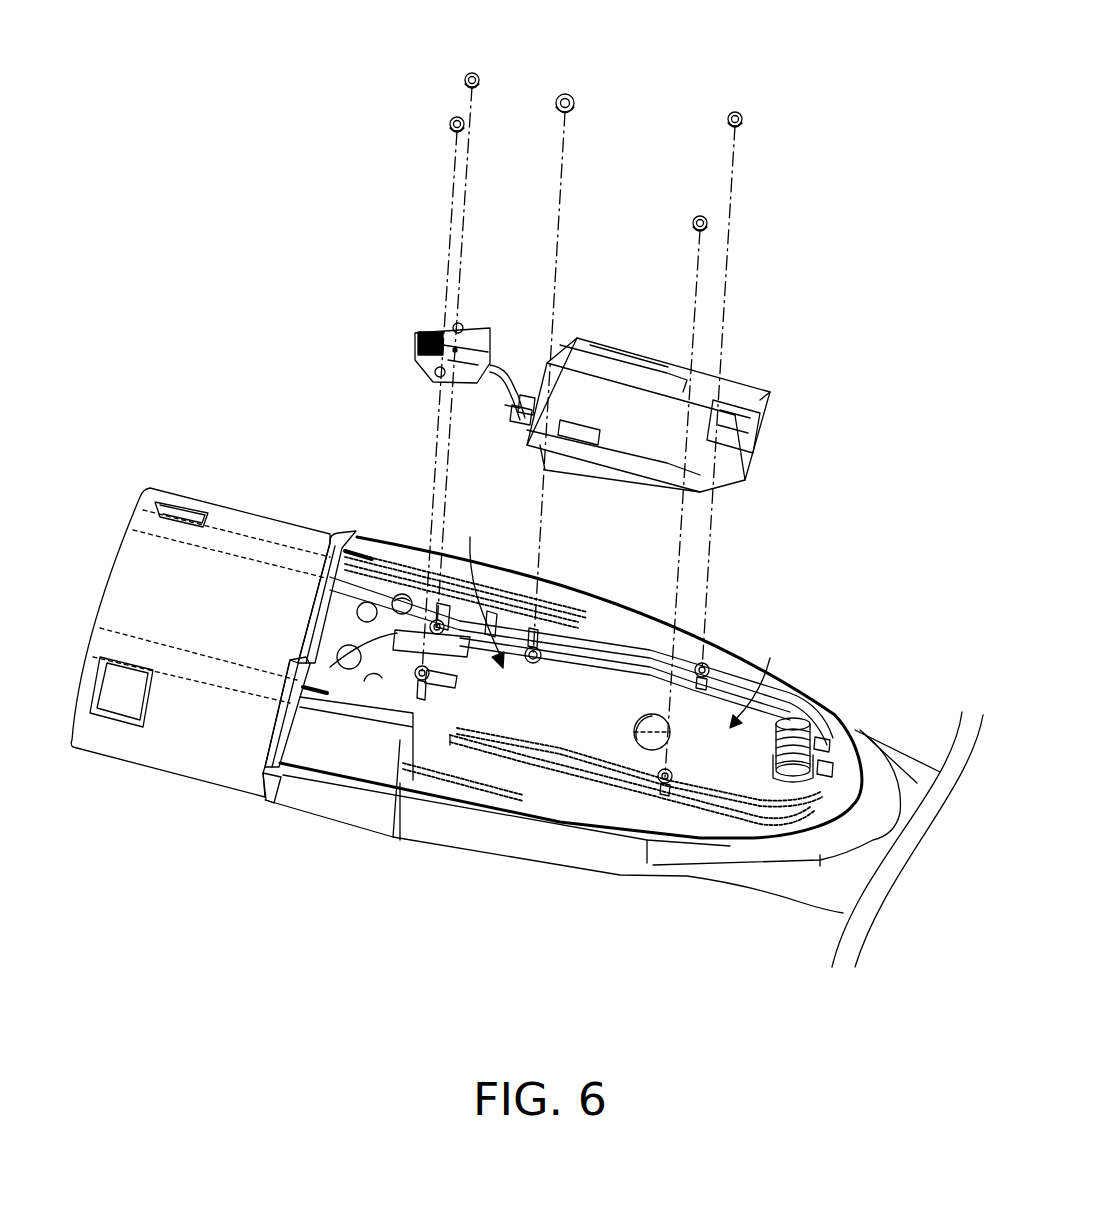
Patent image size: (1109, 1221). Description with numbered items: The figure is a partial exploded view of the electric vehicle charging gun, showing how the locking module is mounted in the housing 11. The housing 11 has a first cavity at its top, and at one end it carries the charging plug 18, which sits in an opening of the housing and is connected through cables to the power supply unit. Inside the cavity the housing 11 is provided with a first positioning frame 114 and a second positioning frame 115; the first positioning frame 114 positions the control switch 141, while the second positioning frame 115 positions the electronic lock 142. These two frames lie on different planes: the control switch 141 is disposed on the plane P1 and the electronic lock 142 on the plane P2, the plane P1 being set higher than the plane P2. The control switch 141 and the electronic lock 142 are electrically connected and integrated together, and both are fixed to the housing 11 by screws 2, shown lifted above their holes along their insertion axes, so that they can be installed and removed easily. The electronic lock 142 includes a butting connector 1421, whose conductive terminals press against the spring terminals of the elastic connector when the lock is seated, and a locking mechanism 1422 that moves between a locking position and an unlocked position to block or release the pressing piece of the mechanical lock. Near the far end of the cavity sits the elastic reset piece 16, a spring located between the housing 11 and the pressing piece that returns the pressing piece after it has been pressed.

The screw 2 is at (455, 120).
The housing 11 is at (460, 827).
The charging plug 18 is at (217, 557).
The first positioning frame 114 is at (277, 768).
The second positioning frame 115 is at (722, 678).
The elastic reset piece 16 is at (795, 720).
The control switch 141 is at (472, 333).
The electronic lock 142 is at (651, 389).
The butting connector 1421 is at (513, 423).
The locking mechanism 1422 is at (743, 373).
The plane P1 is at (479, 588).
The plane P2 is at (756, 679).